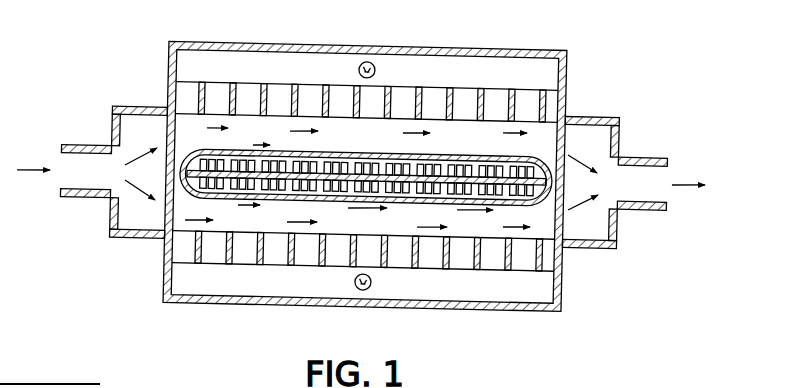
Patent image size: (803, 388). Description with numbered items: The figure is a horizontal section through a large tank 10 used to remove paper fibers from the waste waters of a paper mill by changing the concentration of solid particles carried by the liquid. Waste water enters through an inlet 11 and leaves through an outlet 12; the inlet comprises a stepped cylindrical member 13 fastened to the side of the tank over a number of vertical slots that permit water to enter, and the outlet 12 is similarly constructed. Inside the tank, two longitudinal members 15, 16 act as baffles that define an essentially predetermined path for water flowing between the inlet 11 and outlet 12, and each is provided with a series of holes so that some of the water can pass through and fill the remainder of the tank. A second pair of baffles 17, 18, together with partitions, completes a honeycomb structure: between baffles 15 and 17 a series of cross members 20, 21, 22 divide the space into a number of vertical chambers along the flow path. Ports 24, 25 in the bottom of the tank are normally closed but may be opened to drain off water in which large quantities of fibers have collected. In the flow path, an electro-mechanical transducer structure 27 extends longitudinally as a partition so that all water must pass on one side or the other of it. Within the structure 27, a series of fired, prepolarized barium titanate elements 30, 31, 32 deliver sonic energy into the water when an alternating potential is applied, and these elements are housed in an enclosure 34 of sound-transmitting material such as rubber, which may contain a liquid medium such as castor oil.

The tank 10 is at (548, 299).
The inlet 11 is at (94, 204).
The outlet 12 is at (621, 206).
The stepped cylindrical member 13 is at (127, 115).
The longitudinal member 15 is at (551, 114).
The longitudinal member 16 is at (184, 256).
The baffle 17 is at (548, 86).
The baffle 18 is at (184, 269).
The cross member 20 is at (193, 94).
The cross member 21 is at (216, 91).
The cross member 22 is at (245, 91).
The port 24 is at (360, 63).
The port 25 is at (375, 290).
The structure 27 is at (497, 162).
The fired barium titanate element 30 is at (240, 166).
The fired barium titanate element 31 is at (302, 168).
The fired barium titanate element 32 is at (335, 166).
The enclosure 34 is at (402, 154).